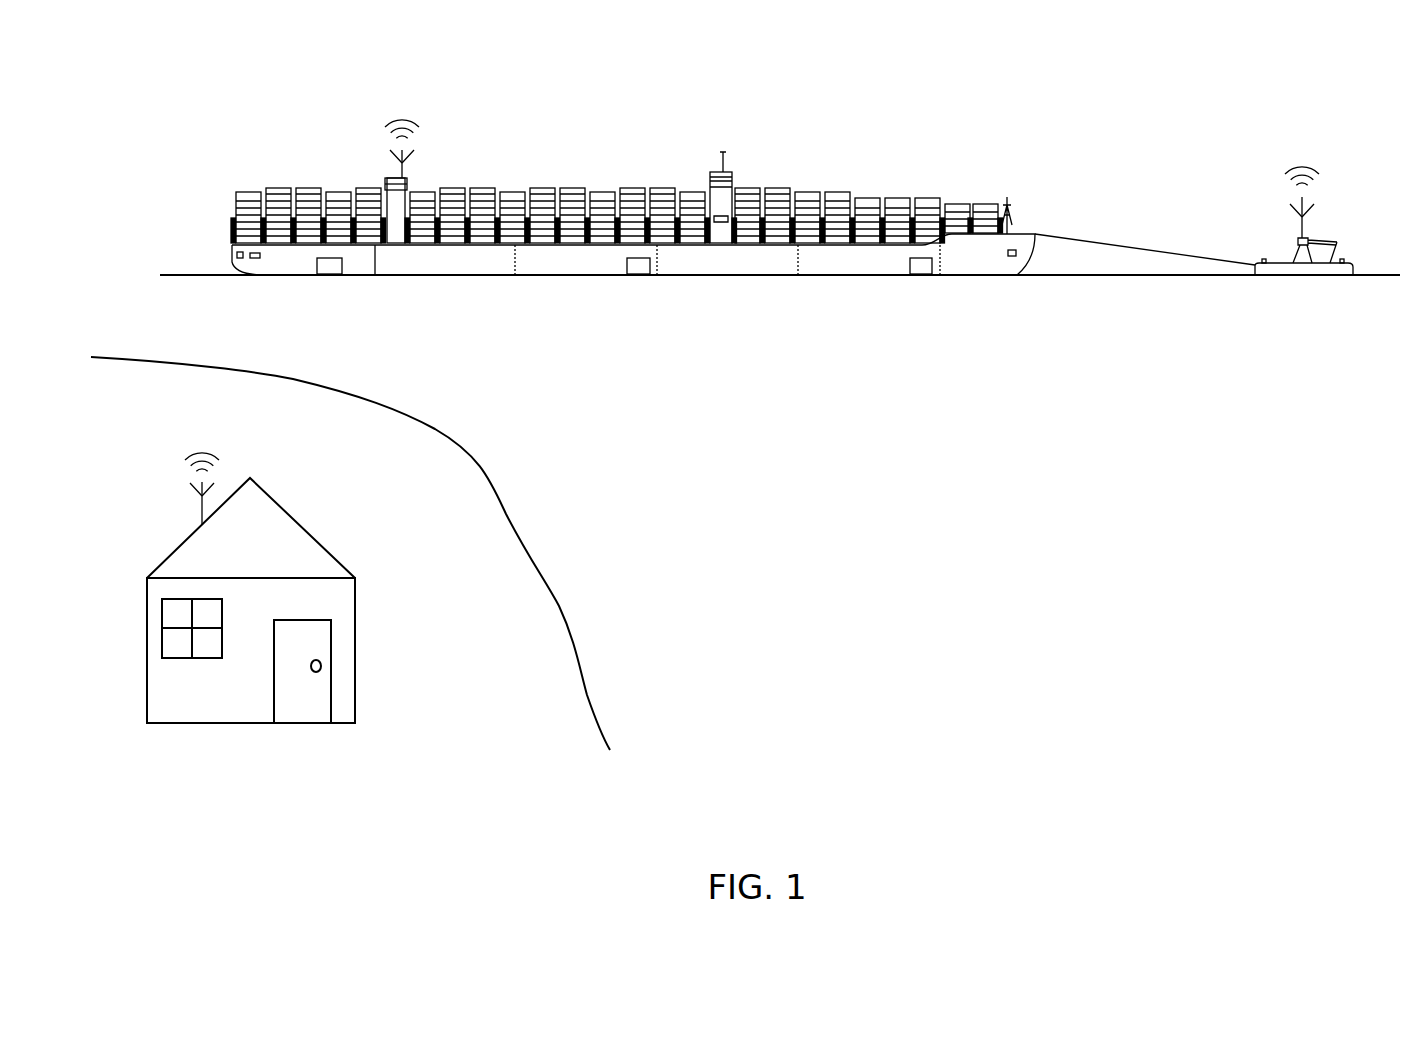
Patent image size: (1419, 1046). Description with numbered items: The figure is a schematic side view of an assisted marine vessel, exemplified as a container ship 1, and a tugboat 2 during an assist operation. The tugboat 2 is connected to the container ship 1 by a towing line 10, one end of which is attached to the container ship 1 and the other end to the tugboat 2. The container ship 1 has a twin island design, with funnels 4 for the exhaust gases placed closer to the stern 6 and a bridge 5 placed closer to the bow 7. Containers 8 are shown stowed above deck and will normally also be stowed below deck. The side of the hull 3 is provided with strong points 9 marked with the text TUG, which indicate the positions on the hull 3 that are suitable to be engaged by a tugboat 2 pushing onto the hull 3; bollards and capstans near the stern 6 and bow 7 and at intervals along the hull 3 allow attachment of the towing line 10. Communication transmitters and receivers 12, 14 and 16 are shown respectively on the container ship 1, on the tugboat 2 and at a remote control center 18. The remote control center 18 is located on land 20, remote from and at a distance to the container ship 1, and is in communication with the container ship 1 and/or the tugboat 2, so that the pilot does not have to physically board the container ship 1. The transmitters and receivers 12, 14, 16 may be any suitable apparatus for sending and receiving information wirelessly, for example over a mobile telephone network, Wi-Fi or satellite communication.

The container ship 1 is at (790, 97).
The tugboat 2 is at (1345, 213).
The hull 3 is at (463, 265).
The funnels 4 is at (393, 178).
The bridge 5 is at (719, 172).
The stern 6 is at (260, 274).
The bow 7 is at (1012, 247).
The containers 8 is at (833, 200).
The strong points 9 is at (328, 275).
The towing line 10 is at (1150, 247).
The communication transmitter and receiver 12 is at (405, 165).
The communication transmitter and receiver 14 is at (1288, 218).
The communication transmitter and receiver 16 is at (197, 514).
The remote control center 18 is at (357, 684).
The land 20 is at (548, 676).